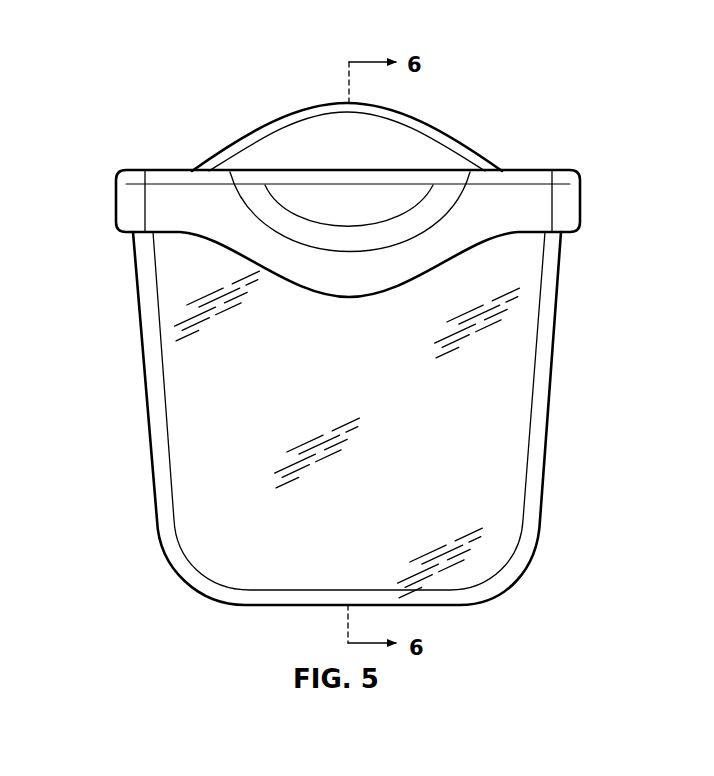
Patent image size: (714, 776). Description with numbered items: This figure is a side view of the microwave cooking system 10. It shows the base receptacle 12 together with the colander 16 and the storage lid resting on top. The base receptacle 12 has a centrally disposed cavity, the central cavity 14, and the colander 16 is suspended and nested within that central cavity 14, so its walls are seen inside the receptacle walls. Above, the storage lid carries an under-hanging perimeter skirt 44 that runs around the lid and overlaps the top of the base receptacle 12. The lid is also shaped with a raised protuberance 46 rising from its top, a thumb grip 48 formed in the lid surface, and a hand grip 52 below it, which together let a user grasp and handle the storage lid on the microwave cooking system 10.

The microwave cooking system 10 is at (90, 46).
The base receptacle 12 is at (546, 463).
The central cavity 14 is at (539, 428).
The colander 16 is at (537, 386).
The under-hanging perimeter skirt 44 is at (571, 210).
The protuberance 46 is at (430, 143).
The thumb grip 48 is at (335, 195).
The hand grip 52 is at (353, 272).